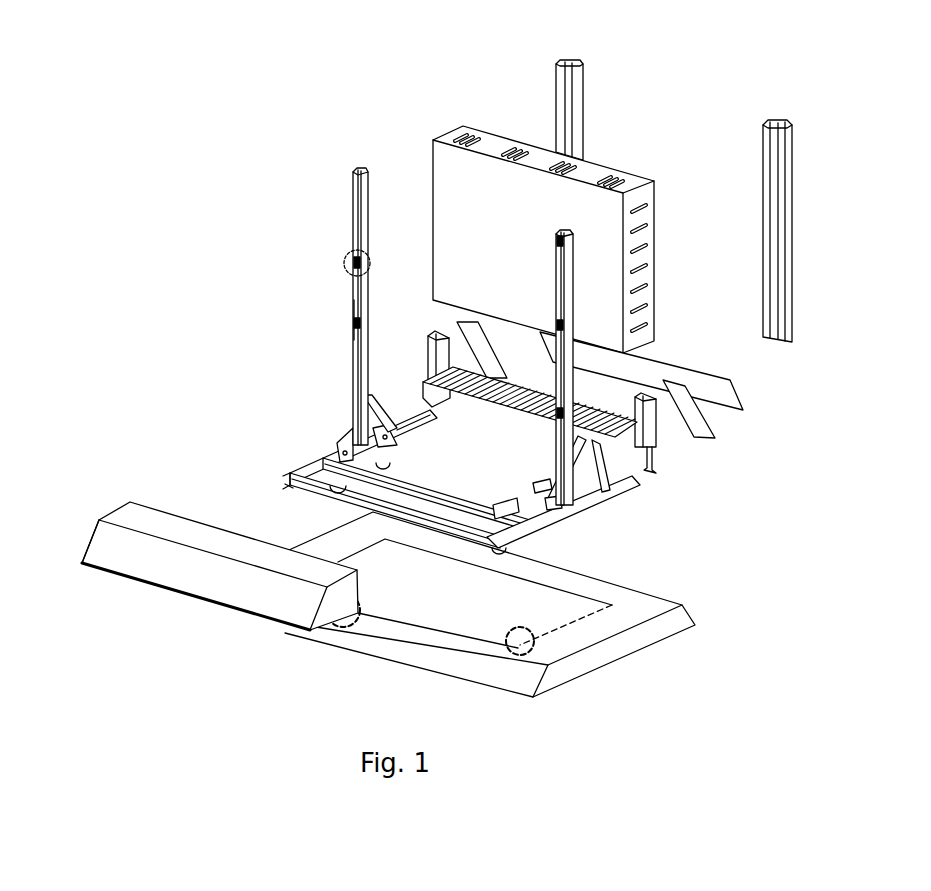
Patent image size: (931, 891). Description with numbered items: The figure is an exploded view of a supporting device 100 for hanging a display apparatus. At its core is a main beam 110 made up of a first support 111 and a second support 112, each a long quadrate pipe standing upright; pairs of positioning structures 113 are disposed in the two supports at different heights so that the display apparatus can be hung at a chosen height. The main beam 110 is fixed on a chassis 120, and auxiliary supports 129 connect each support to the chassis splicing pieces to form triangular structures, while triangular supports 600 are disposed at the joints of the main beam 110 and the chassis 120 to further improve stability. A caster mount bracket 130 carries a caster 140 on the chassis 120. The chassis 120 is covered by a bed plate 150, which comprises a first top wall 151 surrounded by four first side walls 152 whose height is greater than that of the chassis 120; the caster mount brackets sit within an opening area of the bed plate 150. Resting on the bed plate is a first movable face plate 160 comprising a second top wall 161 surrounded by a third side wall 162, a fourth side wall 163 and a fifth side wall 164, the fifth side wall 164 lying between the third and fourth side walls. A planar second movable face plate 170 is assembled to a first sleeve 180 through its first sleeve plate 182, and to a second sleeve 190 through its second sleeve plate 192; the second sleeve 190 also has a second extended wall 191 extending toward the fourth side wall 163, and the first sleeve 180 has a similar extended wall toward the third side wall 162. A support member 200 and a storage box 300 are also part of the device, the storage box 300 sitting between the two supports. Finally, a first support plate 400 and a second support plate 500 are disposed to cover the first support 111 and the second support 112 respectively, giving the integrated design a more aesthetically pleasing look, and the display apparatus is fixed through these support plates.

The supporting device 100 is at (468, 23).
The main beam 110 is at (325, 306).
The first support 111 is at (355, 320).
The second support 112 is at (560, 262).
The positioning structures 113 is at (344, 263).
The chassis 120 is at (454, 471).
The auxiliary supports 129 is at (600, 490).
The caster mount bracket 130 is at (412, 442).
The caster 140 is at (333, 505).
The bed plate 150 is at (493, 604).
The first top wall 151 is at (658, 603).
The first side walls 152 is at (648, 633).
The first movable face plate 160 is at (207, 546).
The second top wall 161 is at (268, 553).
The third side wall 162 is at (330, 622).
The fourth side wall 163 is at (78, 538).
The fifth side wall 164 is at (207, 582).
The second movable face plate 170 is at (682, 362).
The first sleeve 180 is at (663, 458).
The first sleeve plate 182 is at (700, 440).
The second sleeve 190 is at (435, 358).
The second extended wall 191 is at (422, 397).
The second sleeve plate 192 is at (480, 352).
The support member 200 is at (484, 405).
The storage box 300 is at (443, 167).
The first support plate 400 is at (577, 123).
The second support plate 500 is at (770, 177).
The triangular supports 600 is at (345, 440).